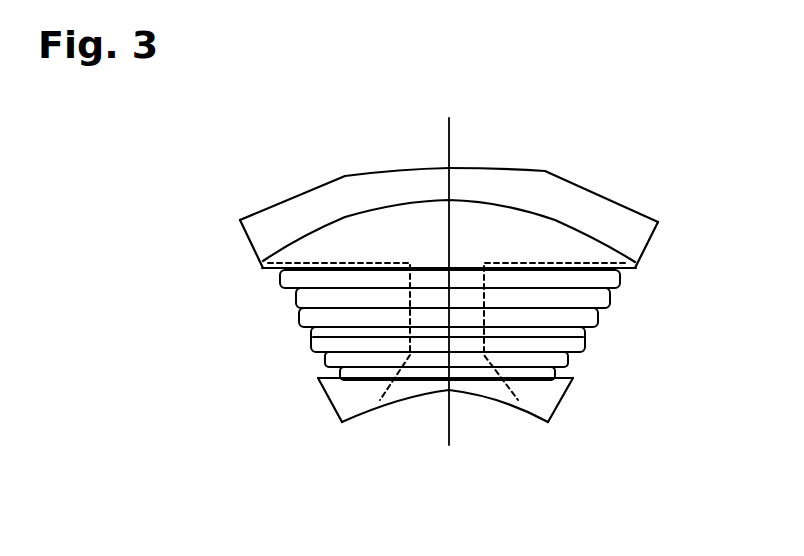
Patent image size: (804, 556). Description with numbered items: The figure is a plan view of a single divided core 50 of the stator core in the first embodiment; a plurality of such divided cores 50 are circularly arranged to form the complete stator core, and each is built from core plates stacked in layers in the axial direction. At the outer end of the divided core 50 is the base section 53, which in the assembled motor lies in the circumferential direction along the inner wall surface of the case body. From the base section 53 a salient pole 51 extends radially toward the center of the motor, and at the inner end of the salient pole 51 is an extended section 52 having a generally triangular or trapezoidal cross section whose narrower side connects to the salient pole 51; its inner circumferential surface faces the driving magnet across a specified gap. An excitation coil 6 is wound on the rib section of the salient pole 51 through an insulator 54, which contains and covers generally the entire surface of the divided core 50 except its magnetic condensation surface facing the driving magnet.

The divided core 50 is at (460, 313).
The base section 53 is at (350, 236).
The excitation coil 6 is at (570, 318).
The salient pole 51 is at (427, 347).
The insulator 54 is at (573, 385).
The extended section 52 is at (423, 385).